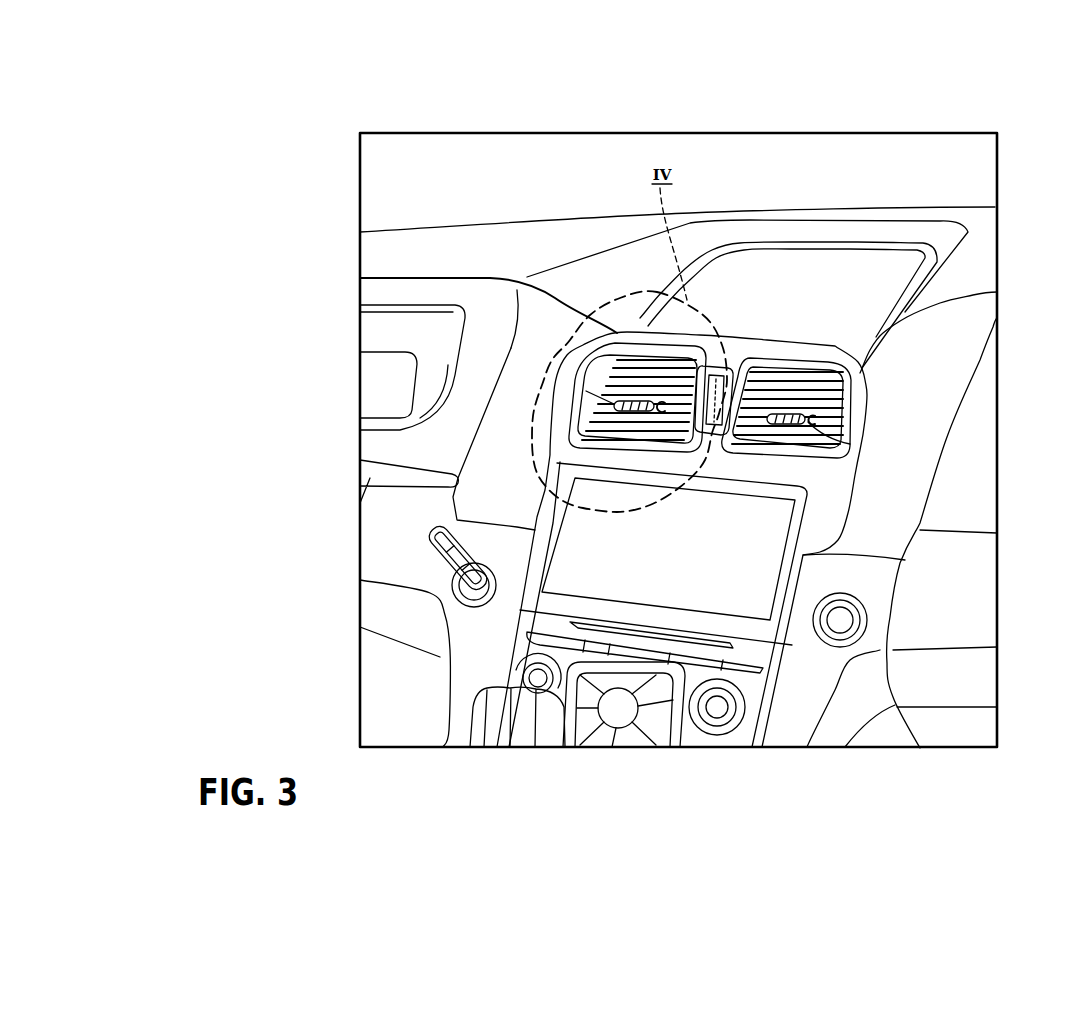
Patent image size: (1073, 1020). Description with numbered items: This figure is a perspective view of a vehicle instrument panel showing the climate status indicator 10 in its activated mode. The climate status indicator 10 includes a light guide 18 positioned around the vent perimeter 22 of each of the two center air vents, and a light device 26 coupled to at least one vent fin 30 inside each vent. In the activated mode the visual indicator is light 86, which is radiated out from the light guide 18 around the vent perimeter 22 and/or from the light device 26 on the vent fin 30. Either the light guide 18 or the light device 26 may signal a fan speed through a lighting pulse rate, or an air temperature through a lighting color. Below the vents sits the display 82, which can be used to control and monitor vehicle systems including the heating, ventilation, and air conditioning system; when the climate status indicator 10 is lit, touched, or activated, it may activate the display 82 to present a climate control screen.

The climate status indicator 10 is at (786, 350).
The vent perimeter 22 is at (630, 340).
The light guide 18 is at (603, 340).
The vent fin 30 is at (600, 376).
The light device 26 is at (588, 389).
The light 86 is at (552, 395).
The display 82 is at (641, 585).